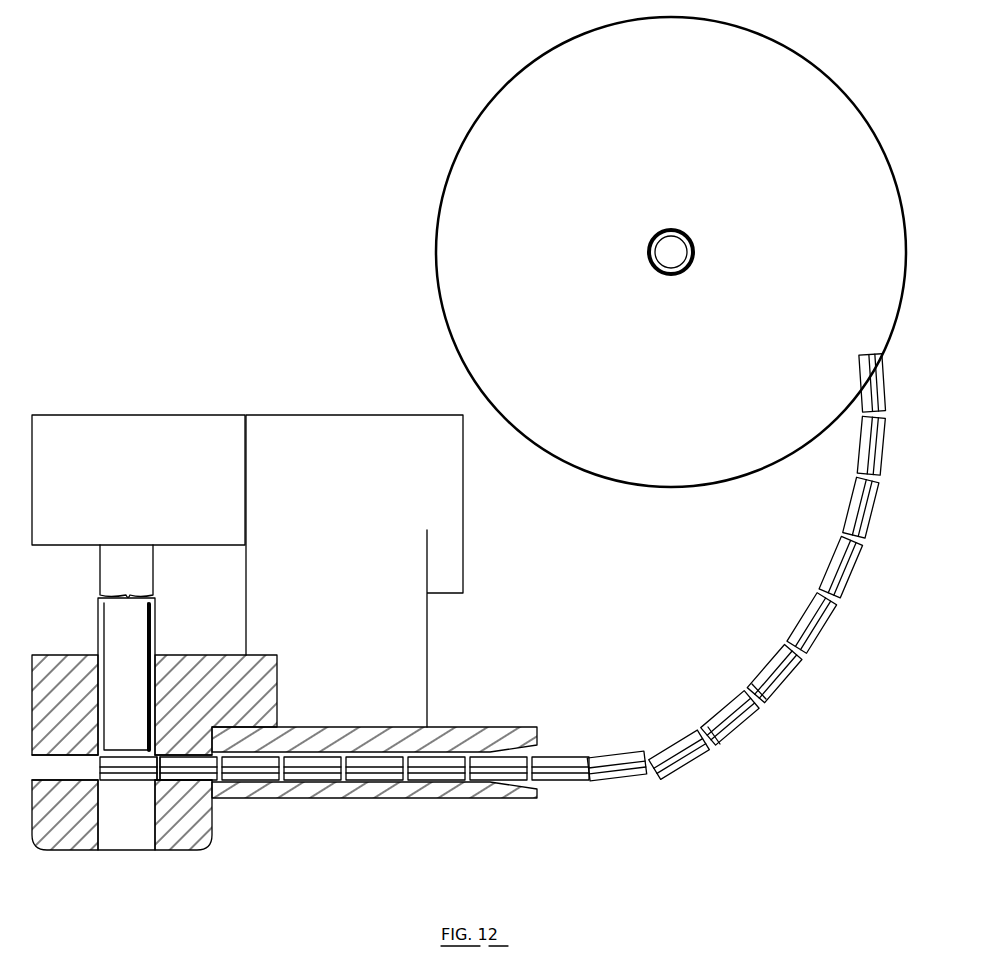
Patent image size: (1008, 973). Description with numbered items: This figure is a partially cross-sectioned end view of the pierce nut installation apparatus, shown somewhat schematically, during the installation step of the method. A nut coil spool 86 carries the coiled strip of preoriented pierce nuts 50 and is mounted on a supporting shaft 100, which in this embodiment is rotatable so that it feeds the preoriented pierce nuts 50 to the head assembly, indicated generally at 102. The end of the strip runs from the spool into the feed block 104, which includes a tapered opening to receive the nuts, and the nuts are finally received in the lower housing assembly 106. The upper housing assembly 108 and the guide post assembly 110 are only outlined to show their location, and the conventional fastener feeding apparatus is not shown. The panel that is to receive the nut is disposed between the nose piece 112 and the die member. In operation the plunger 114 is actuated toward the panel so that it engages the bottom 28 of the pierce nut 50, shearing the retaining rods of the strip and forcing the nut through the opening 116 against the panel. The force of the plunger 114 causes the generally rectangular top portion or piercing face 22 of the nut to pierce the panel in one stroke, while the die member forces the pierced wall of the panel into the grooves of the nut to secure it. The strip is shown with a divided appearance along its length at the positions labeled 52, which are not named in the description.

The nut coil spool 86 is at (452, 267).
The supporting shaft 100 is at (694, 256).
The head assembly 102 is at (190, 409).
The upper housing assembly 108 is at (152, 467).
The guide post assembly 110 is at (365, 467).
The plunger 114 is at (102, 676).
The bottom 28 is at (120, 752).
The lower housing assembly 106 is at (195, 672).
The feed block 104 is at (362, 790).
The nose piece 112 is at (190, 836).
The opening 116 is at (152, 828).
The preoriented pierce nut 50 is at (473, 581).
The segment joint 52 is at (158, 755).
The piercing face 22 is at (150, 782).